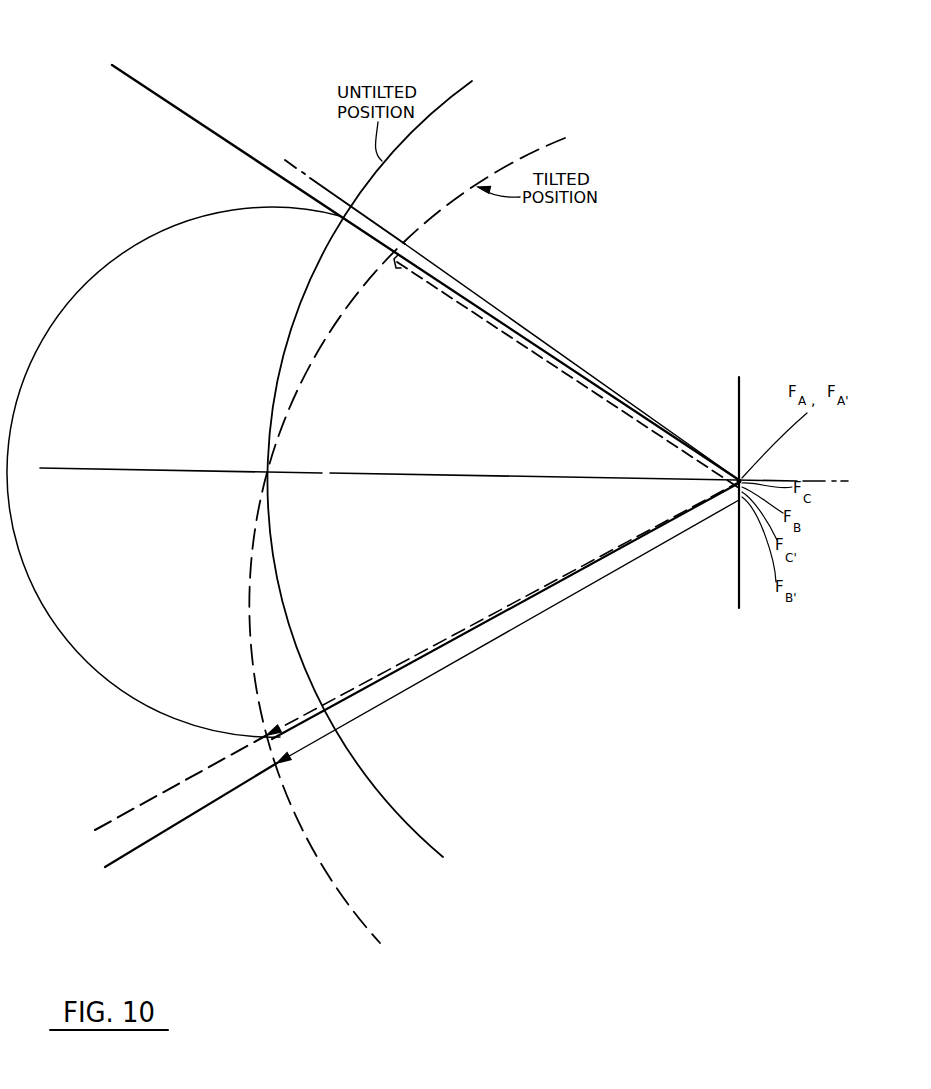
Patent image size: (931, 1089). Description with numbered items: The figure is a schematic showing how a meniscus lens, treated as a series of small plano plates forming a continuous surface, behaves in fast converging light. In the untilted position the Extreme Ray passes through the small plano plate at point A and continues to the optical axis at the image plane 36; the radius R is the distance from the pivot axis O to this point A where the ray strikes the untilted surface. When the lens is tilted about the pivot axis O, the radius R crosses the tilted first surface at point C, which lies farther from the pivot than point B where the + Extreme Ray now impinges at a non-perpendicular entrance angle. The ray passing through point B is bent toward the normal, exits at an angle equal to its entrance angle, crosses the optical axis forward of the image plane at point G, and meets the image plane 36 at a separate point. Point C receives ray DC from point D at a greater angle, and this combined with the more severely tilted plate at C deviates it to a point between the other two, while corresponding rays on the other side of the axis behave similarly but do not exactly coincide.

The image plane 36 is at (739, 572).
The pivot axis O is at (444, 484).
The radius R is at (268, 465).
The point D is at (369, 469).
The point A is at (328, 762).
The point B is at (270, 783).
The point C is at (417, 495).
The point G is at (739, 477).